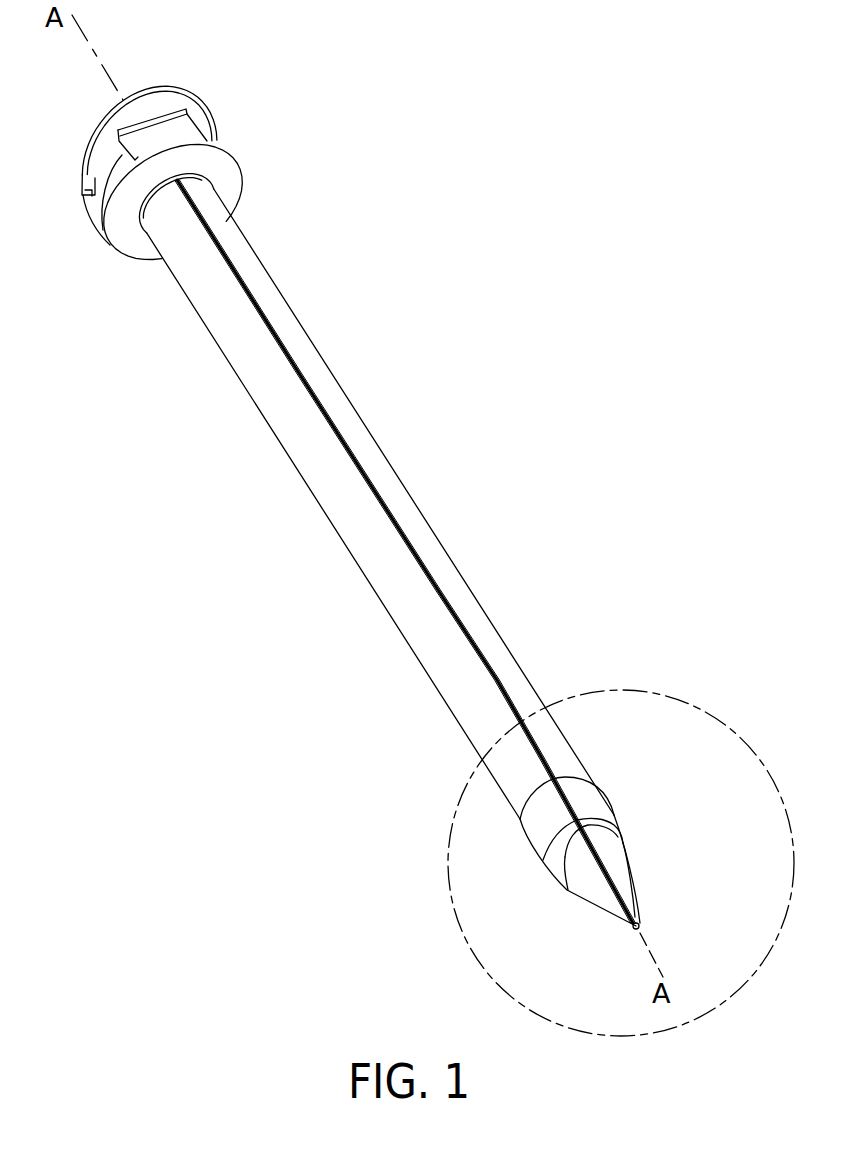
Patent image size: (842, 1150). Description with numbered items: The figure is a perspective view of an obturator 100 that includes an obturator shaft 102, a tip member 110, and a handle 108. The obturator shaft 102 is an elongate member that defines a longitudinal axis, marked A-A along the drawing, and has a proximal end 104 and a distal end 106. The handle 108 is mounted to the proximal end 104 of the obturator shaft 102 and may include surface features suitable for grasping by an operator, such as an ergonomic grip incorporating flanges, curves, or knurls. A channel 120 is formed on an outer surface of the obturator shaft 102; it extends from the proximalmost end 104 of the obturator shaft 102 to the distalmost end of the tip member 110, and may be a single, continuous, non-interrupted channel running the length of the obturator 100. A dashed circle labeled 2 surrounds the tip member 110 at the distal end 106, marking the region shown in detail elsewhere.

The obturator 100 is at (402, 87).
The handle 108 is at (227, 102).
The proximal end 104 is at (242, 198).
The obturator shaft 102 is at (397, 482).
The channel 120 is at (315, 403).
The distal end 106 is at (531, 786).
The tip member 110 is at (627, 795).
The detail region of FIG. 2 is at (647, 692).